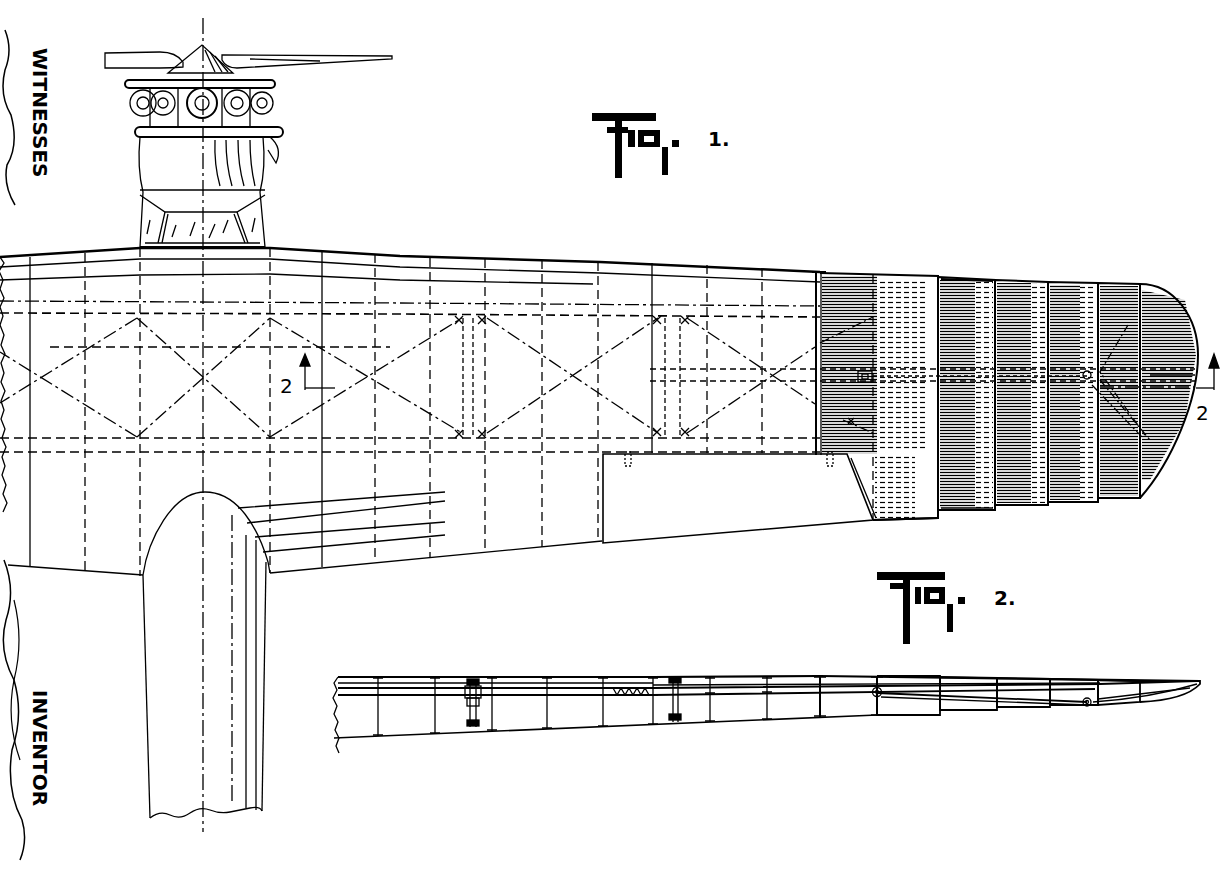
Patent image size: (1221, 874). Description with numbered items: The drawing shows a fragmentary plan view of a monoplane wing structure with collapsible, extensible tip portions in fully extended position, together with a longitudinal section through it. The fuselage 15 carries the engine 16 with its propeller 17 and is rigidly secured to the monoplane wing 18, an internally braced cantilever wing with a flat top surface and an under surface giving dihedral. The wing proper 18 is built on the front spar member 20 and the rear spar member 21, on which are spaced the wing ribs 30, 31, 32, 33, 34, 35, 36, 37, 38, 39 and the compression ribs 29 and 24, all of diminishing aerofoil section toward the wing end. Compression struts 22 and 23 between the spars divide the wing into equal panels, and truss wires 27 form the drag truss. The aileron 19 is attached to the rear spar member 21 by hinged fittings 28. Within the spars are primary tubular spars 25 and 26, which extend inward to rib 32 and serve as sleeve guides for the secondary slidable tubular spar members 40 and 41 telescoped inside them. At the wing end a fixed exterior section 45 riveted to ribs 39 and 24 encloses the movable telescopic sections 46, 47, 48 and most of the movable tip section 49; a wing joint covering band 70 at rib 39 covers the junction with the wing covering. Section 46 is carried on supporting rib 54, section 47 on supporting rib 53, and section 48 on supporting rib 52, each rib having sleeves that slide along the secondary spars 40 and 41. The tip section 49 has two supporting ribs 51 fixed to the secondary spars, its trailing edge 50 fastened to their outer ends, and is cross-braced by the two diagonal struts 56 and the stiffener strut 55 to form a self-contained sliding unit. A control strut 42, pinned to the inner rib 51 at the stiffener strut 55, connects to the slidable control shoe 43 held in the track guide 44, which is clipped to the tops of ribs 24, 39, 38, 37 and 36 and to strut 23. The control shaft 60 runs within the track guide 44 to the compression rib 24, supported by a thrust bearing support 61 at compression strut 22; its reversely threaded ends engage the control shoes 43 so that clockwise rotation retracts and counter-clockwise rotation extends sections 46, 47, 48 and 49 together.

In FIG. 1, the fuselage 15 is at (215, 178).
In FIG. 1, the engine 16 is at (243, 108).
In FIG. 1, the propeller 17 is at (280, 61).
In FIG. 1, the monoplane wing 18 is at (337, 288).
In FIG. 1, the aileron 19 is at (755, 518).
In FIG. 1, the front spar member 20 is at (407, 308).
In FIG. 1, the rear spar member 21 is at (412, 450).
In FIG. 1, the compression strut 22 is at (472, 375).
In FIG. 2, the compression strut 22 is at (470, 706).
In FIG. 1, the compression strut 23 is at (672, 343).
In FIG. 2, the compression strut 23 is at (673, 707).
In FIG. 1, the compression rib 24 is at (874, 352).
In FIG. 2, the compression rib 24 is at (874, 702).
In FIG. 1, the primary tubular spar 25 is at (585, 316).
In FIG. 1, the primary tubular spar 26 is at (530, 450).
In FIG. 1, the truss wires 27 is at (175, 405).
In FIG. 1, the hinged fittings 28 is at (828, 462).
In FIG. 1, the compression rib 29 is at (273, 570).
In FIG. 1, the wing rib 30 is at (325, 545).
In FIG. 1, the wing rib 31 is at (385, 552).
In FIG. 2, the wing rib 31 is at (378, 722).
In FIG. 1, the wing rib 32 is at (435, 545).
In FIG. 2, the wing rib 32 is at (433, 722).
In FIG. 1, the wing rib 33 is at (490, 548).
In FIG. 2, the wing rib 33 is at (490, 717).
In FIG. 1, the wing rib 34 is at (545, 543).
In FIG. 2, the wing rib 34 is at (547, 707).
In FIG. 1, the wing rib 35 is at (600, 545).
In FIG. 2, the wing rib 35 is at (603, 713).
In FIG. 1, the wing rib 36 is at (652, 296).
In FIG. 2, the wing rib 36 is at (653, 707).
In FIG. 1, the wing rib 37 is at (707, 296).
In FIG. 2, the wing rib 37 is at (710, 707).
In FIG. 1, the wing rib 38 is at (762, 296).
In FIG. 2, the wing rib 38 is at (765, 705).
In FIG. 1, the wing rib 39 is at (822, 292).
In FIG. 2, the wing rib 39 is at (820, 708).
In FIG. 1, the secondary slidable tubular spar member 40 is at (972, 310).
In FIG. 2, the secondary slidable tubular spar member 40 is at (1107, 698).
In FIG. 1, the secondary slidable tubular spar member 41 is at (985, 440).
In FIG. 1, the control strut 42 is at (930, 376).
In FIG. 2, the control strut 42 is at (958, 698).
In FIG. 1, the control shoe 43 is at (862, 383).
In FIG. 2, the control shoe 43 is at (873, 690).
In FIG. 1, the track guide 44 is at (722, 377).
In FIG. 2, the track guide 44 is at (737, 690).
In FIG. 1, the fixed exterior section 45 is at (915, 290).
In FIG. 2, the fixed exterior section 45 is at (925, 670).
In FIG. 1, the movable telescopic section 46 is at (960, 285).
In FIG. 2, the movable telescopic section 46 is at (977, 688).
In FIG. 1, the movable telescopic section 47 is at (1020, 290).
In FIG. 2, the movable telescopic section 47 is at (1030, 679).
In FIG. 1, the movable telescopic section 48 is at (1066, 290).
In FIG. 2, the movable telescopic section 48 is at (1080, 675).
In FIG. 1, the movable tip section 49 is at (1118, 288).
In FIG. 2, the movable tip section 49 is at (1143, 688).
In FIG. 1, the trailing edge 50 is at (1180, 418).
In FIG. 2, the trailing edge 50 is at (1197, 682).
In FIG. 1, the supporting ribs 51 is at (1102, 500).
In FIG. 2, the supporting ribs 51 is at (1090, 707).
In FIG. 1, the supporting rib 52 is at (1052, 506).
In FIG. 2, the supporting rib 52 is at (1047, 708).
In FIG. 1, the supporting rib 53 is at (998, 510).
In FIG. 2, the supporting rib 53 is at (993, 710).
In FIG. 1, the supporting rib 54 is at (940, 516).
In FIG. 2, the supporting rib 54 is at (937, 709).
In FIG. 1, the stiffener strut 55 is at (1150, 375).
In FIG. 2, the stiffener strut 55 is at (1163, 700).
In FIG. 1, the diagonal struts 56 is at (1128, 320).
In FIG. 2, the control shaft 60 is at (570, 689).
In FIG. 2, the thrust bearing support 61 is at (478, 688).
In FIG. 1, the wing joint covering band 70 is at (818, 272).